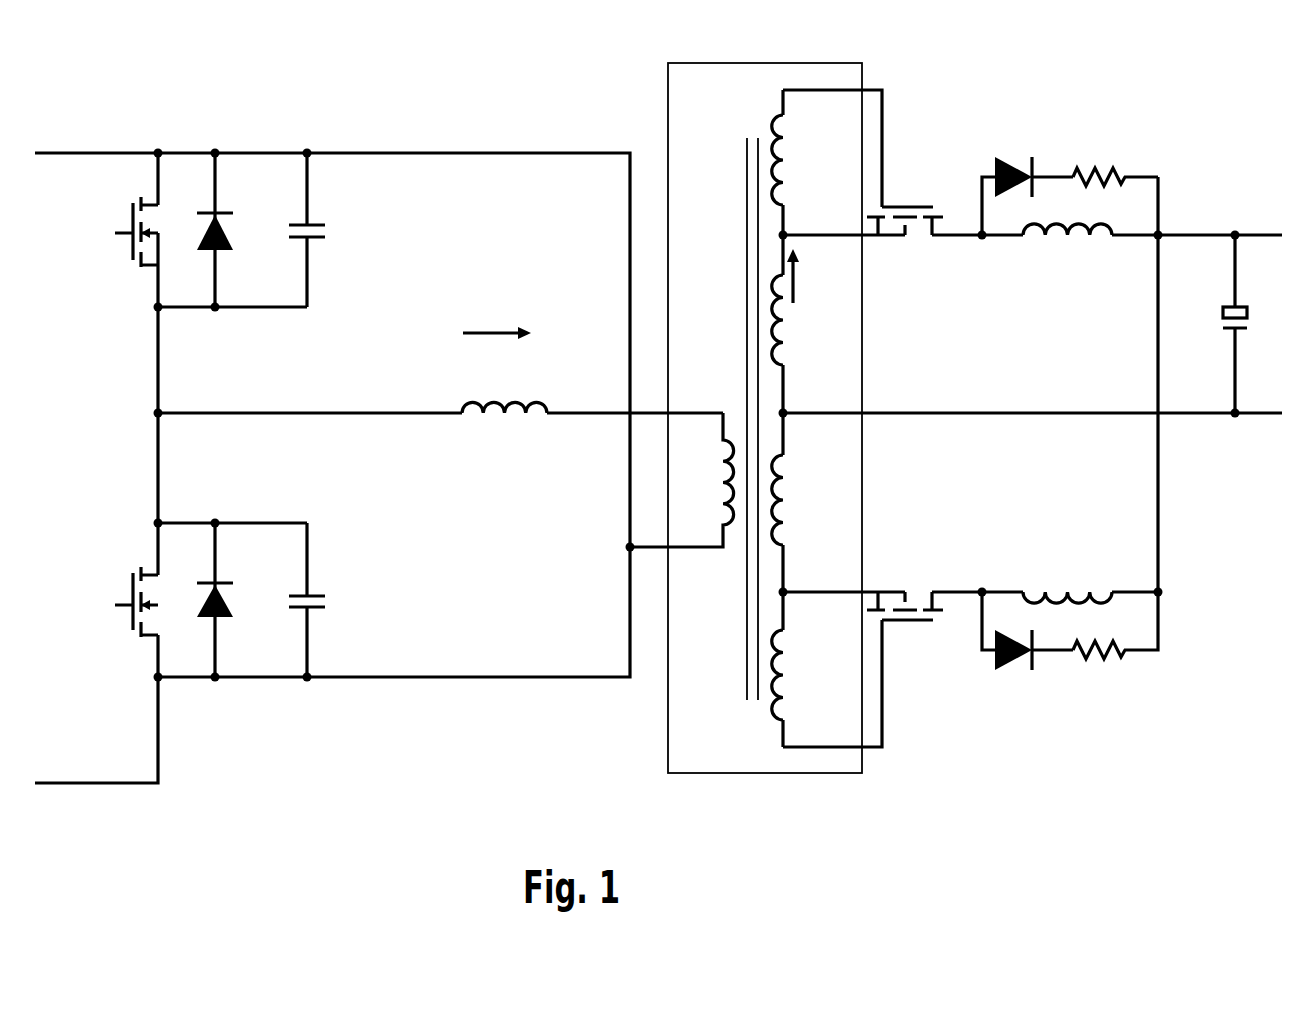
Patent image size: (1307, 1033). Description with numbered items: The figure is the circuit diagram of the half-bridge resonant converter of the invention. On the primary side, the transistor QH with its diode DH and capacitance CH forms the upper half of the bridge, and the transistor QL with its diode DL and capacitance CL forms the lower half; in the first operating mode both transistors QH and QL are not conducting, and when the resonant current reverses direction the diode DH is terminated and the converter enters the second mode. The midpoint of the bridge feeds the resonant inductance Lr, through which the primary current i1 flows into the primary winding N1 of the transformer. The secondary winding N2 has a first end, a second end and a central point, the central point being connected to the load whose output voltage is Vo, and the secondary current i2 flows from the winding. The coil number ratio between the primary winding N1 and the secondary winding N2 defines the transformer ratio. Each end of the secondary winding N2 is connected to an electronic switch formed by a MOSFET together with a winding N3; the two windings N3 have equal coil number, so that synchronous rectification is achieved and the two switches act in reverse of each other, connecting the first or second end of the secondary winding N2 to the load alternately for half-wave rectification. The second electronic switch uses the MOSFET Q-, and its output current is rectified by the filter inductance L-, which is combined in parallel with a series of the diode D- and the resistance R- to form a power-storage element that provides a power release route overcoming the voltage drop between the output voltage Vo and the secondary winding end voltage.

The transistor QH is at (116, 232).
The diode DH is at (236, 230).
The upper switch snubber capacitor CH is at (329, 230).
The transistor QL is at (116, 602).
The lower switch antiparallel diode DL is at (234, 600).
The lower switch snubber capacitor CL is at (327, 600).
The resonant inductance Lr is at (504, 440).
The primary current i1(t) i1 is at (500, 363).
The primary winding N1 is at (682, 480).
The secondary winding N2 is at (800, 410).
The winding N3 is at (827, 418).
The secondary current i2(t) i2 is at (824, 276).
The output voltage Vo is at (1265, 324).
The MOSFET Q- is at (905, 575).
The diode D- is at (1027, 654).
The resistance R- is at (1115, 654).
The filter inductance L- is at (1067, 569).